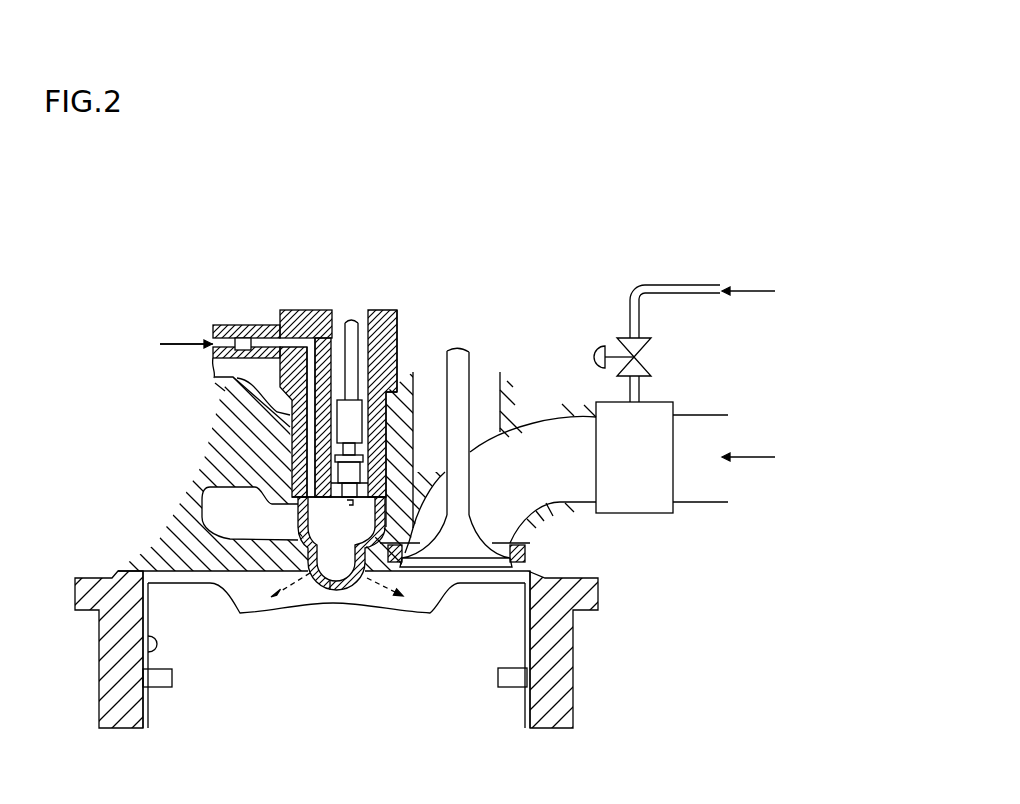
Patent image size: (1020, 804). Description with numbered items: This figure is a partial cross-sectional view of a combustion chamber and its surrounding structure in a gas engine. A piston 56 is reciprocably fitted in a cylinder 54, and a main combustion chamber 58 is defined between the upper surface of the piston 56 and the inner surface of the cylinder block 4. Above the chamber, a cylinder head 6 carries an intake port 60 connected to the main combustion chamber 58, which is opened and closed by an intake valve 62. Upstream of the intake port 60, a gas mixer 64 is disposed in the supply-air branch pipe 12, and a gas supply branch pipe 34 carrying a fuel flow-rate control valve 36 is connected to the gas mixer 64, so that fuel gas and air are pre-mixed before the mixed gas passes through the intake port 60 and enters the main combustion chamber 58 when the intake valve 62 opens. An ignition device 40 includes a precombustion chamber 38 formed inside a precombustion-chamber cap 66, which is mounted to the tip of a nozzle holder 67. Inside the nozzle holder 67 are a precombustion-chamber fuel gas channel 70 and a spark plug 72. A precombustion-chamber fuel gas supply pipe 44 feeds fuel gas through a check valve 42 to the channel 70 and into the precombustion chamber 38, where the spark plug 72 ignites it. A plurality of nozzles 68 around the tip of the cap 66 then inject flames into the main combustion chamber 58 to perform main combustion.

The cylinder block 4 is at (575, 645).
The cylinder head 6 is at (536, 520).
The supply-air branch pipe 12 is at (700, 504).
The gas supply branch pipe 34 is at (688, 286).
The fuel flow-rate control valve 36 is at (650, 350).
The precombustion chamber 38 is at (312, 517).
The ignition device 40 is at (403, 310).
The check valve 42 is at (243, 337).
The precombustion-chamber fuel gas supply pipe 44 is at (230, 325).
The cylinder 54 is at (152, 652).
The piston 56 is at (150, 705).
The main combustion chamber 58 is at (233, 592).
The intake port 60 is at (538, 440).
The intake valve 62 is at (452, 362).
The gas mixer 64 is at (676, 405).
The precombustion-chamber cap 66 is at (330, 582).
The nozzle holder 67 is at (398, 343).
The nozzles 68 is at (308, 574).
The precombustion-chamber fuel gas channel 70 is at (314, 356).
The spark plug 72 is at (350, 470).